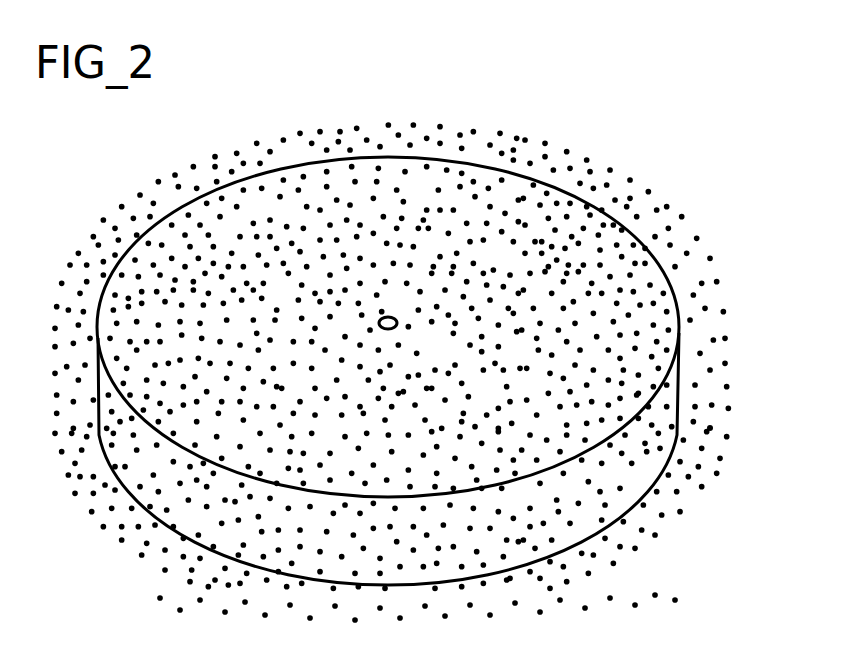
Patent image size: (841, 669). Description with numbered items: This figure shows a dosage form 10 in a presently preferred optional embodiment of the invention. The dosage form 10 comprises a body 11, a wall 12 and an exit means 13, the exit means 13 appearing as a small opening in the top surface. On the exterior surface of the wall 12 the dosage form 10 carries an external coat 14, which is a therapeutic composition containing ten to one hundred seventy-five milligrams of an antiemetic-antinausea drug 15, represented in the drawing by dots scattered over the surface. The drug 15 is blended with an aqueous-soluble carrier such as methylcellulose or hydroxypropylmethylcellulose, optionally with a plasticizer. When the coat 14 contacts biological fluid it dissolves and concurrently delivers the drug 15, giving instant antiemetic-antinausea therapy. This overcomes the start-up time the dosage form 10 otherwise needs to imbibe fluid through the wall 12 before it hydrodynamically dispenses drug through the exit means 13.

The dosage form 10 is at (445, 310).
The body 11 is at (673, 286).
The wall 12 is at (678, 353).
The exit means 13 is at (392, 317).
The external coat 14 is at (707, 393).
The antiemetic-antinausea drug 15 is at (713, 428).